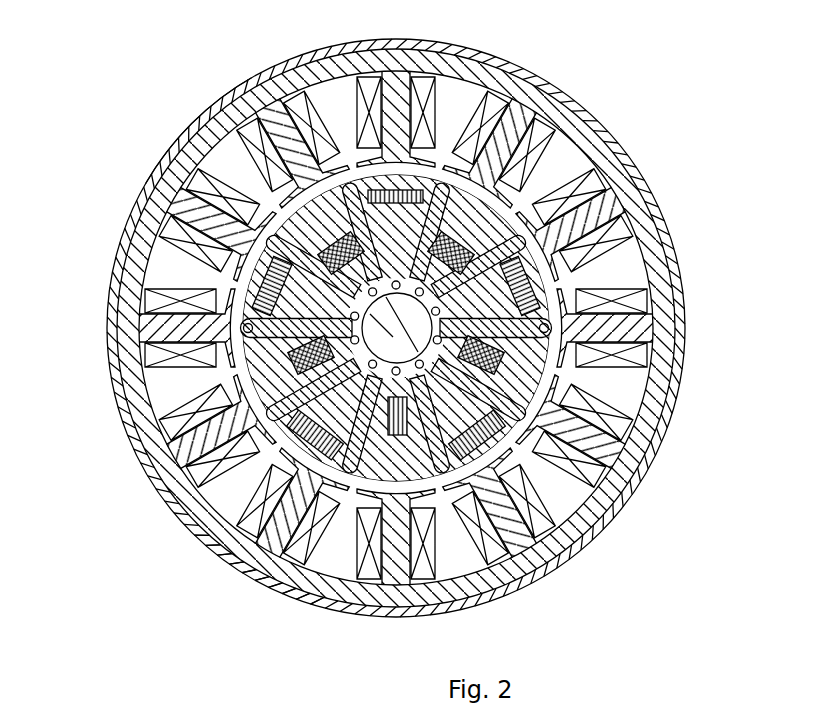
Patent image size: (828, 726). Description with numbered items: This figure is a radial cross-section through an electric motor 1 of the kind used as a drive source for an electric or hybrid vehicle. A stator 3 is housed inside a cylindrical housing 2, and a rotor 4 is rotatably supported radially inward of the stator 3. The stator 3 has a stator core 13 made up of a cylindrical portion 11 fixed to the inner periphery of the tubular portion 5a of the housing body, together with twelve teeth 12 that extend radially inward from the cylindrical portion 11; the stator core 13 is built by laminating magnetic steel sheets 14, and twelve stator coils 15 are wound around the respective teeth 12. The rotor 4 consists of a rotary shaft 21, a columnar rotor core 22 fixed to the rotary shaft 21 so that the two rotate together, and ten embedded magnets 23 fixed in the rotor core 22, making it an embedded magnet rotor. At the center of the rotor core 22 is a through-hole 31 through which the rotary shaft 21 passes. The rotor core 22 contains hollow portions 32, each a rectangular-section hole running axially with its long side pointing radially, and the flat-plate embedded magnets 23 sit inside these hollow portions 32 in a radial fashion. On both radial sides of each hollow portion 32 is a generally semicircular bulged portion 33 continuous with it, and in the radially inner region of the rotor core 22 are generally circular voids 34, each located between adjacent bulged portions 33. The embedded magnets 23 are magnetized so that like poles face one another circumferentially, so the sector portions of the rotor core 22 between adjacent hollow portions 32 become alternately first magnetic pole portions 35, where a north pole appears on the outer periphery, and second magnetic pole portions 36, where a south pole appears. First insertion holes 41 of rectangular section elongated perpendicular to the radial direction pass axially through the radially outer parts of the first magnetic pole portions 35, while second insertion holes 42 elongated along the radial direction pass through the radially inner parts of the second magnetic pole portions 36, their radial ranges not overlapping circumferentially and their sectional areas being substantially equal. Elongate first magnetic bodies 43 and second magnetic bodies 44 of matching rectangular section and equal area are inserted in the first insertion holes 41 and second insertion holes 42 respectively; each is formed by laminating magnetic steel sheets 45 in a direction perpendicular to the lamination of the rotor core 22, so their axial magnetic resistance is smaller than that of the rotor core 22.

The electric motor 1 is at (91, 72).
The housing 2 is at (584, 104).
The stator 3 is at (208, 120).
The rotor 4 is at (589, 131).
The tubular portion 5a is at (186, 133).
The cylindrical portion 11 is at (396, 309).
The teeth 12 is at (521, 110).
The stator core 13 is at (396, 309).
The magnetic steel sheets 14 is at (396, 309).
The stator coils 15 is at (604, 184).
The rotary shaft 21 is at (395, 292).
The rotor core 22 is at (414, 178).
The embedded magnets 23 is at (521, 412).
The through-hole 31 is at (338, 311).
The hollow portions 32 is at (396, 365).
The bulged portion 33 is at (583, 276).
The voids 34 is at (321, 372).
The first magnetic pole portions 35 is at (384, 180).
The second magnetic pole portions 36 is at (306, 222).
The first insertion holes 41 is at (261, 291).
The second insertion holes 42 is at (261, 363).
The first magnetic bodies 43 is at (203, 536).
The second magnetic bodies 44 is at (355, 562).
The magnetic steel sheets 45 is at (269, 470).